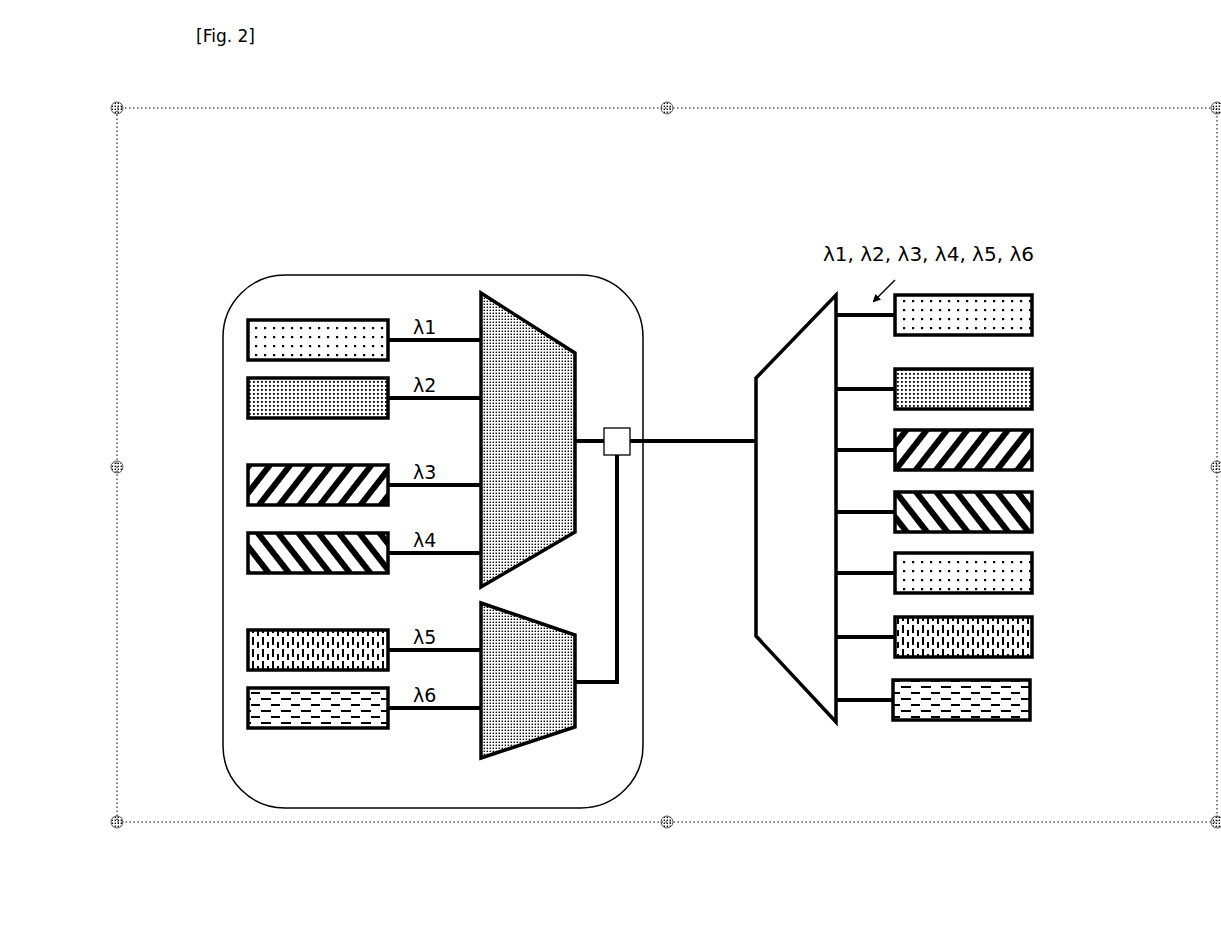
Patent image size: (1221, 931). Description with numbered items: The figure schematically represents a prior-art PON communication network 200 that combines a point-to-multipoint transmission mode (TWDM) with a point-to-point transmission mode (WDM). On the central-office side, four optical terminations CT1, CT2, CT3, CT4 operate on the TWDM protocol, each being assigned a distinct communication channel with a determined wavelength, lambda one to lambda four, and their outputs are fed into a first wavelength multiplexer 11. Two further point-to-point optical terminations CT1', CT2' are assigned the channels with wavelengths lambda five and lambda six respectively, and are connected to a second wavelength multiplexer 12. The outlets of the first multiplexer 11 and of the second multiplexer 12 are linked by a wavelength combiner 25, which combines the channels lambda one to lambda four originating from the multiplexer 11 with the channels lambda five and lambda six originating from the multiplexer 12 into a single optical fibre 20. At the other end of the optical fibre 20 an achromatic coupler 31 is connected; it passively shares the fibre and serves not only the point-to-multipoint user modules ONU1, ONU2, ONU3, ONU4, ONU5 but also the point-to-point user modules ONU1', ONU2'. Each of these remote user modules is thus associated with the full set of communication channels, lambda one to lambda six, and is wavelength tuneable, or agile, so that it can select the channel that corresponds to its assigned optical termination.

The network 200 is at (340, 213).
The wavelength multiplexer 11 is at (527, 318).
The second wavelength multiplexer 12 is at (567, 722).
The optical fibre 20 is at (676, 440).
The wavelength combiner 25 is at (620, 462).
The achromatic coupler 31 is at (797, 316).
The optical termination CT1 is at (272, 315).
The optical termination CT2 is at (270, 381).
The optical termination CT3 is at (248, 485).
The optical termination CT4 is at (248, 553).
The point-to-point optical termination CT1' is at (270, 623).
The point-to-point optical termination CT2' is at (270, 688).
The user module ONU1 is at (1031, 295).
The user module ONU2 is at (1031, 368).
The user module ONU3 is at (1032, 450).
The user module ONU4 is at (1032, 515).
The user module ONU5 is at (1032, 578).
The point-to-point user module ONU1' is at (1035, 615).
The point-to-point user module ONU2' is at (1032, 679).